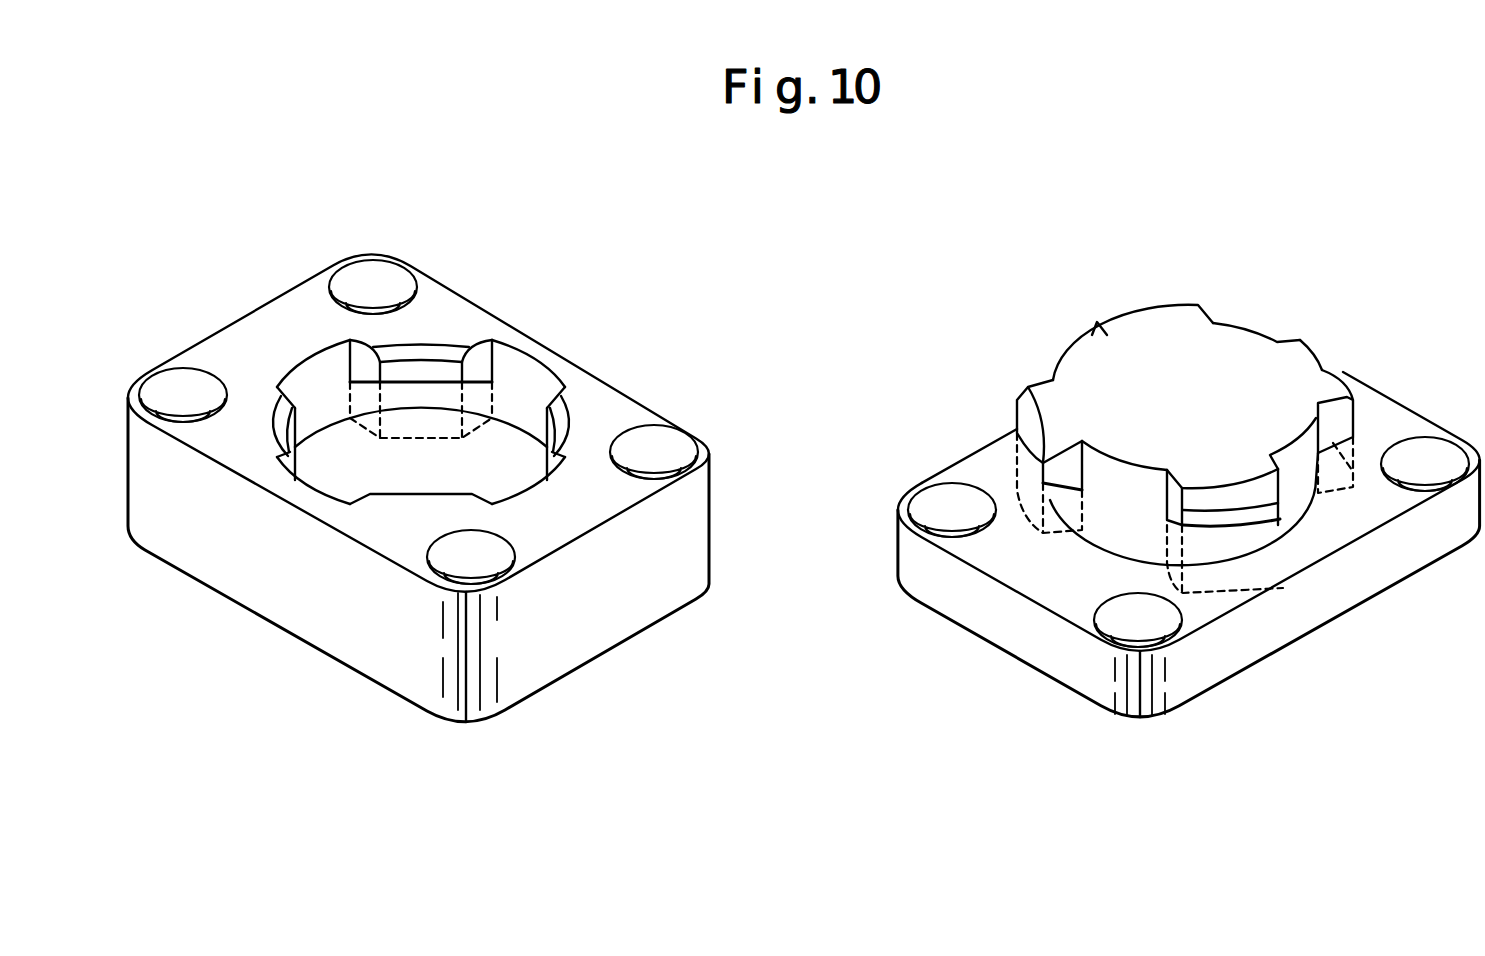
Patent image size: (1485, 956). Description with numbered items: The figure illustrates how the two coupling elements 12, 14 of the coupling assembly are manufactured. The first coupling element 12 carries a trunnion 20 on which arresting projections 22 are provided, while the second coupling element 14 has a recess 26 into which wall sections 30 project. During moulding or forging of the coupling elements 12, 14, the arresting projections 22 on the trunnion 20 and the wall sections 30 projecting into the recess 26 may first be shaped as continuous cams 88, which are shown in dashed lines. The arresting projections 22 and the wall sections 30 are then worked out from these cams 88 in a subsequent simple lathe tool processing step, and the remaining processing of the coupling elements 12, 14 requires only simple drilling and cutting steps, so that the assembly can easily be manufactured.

The coupling element 12 is at (1369, 331).
The coupling element 14 is at (262, 300).
The trunnion 20 is at (1197, 372).
The arresting projections 22 is at (1027, 385).
The recess 26 is at (365, 470).
The wall sections 30 is at (433, 347).
The continuous cams 88 is at (513, 400).